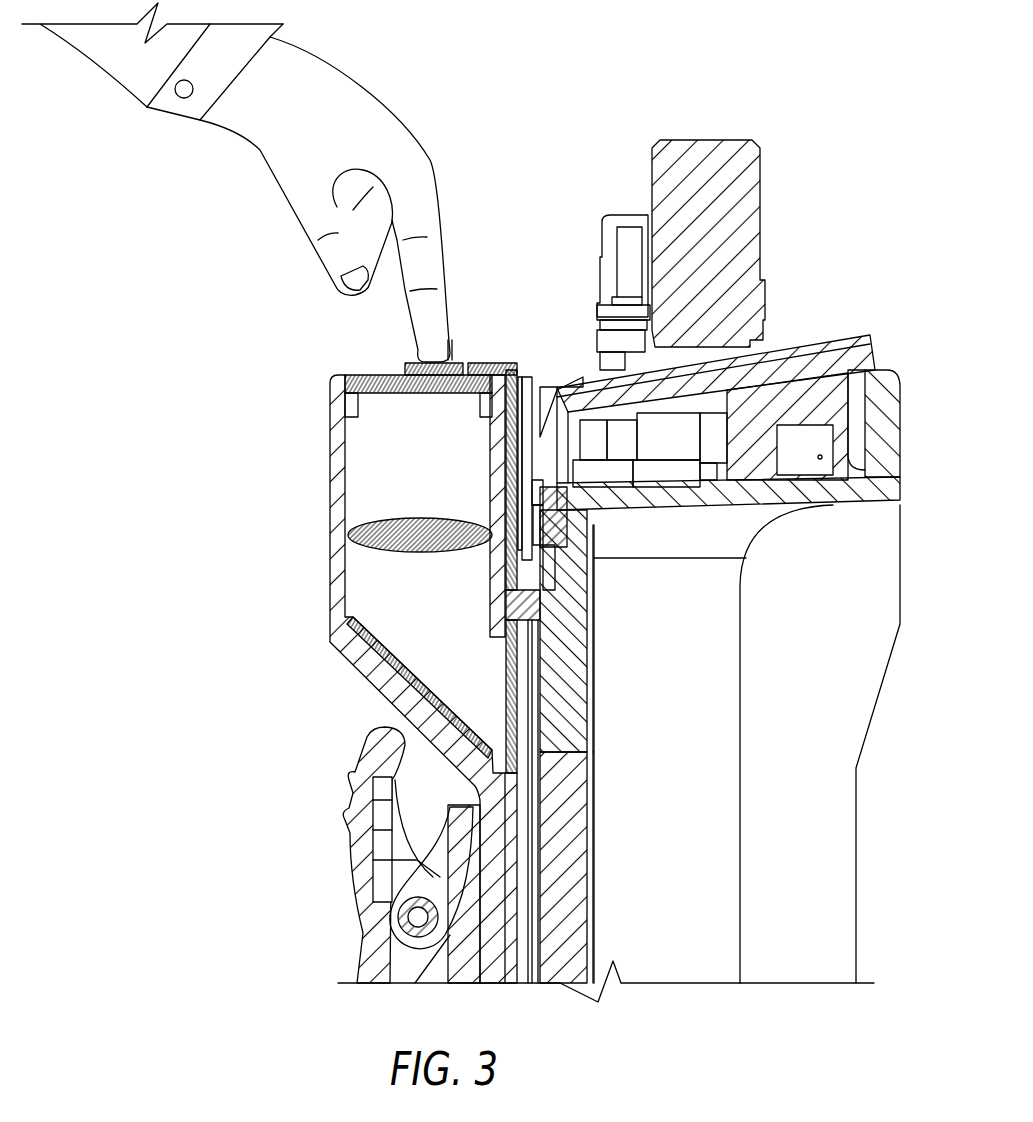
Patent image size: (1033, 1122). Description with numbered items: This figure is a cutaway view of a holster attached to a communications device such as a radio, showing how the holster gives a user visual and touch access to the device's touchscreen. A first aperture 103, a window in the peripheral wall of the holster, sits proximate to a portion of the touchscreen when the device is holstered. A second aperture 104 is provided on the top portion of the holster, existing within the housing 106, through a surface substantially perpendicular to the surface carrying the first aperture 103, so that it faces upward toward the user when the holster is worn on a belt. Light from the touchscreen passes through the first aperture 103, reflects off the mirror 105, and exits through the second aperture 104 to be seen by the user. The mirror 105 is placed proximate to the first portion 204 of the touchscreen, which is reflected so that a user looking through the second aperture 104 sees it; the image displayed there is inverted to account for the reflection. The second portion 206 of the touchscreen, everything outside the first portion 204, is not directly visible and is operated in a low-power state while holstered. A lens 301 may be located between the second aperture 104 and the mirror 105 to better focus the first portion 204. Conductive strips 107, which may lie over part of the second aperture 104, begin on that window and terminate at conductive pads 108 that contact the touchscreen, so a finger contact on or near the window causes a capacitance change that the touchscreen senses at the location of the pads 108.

The first aperture 103 is at (512, 697).
The second aperture 104 is at (377, 367).
The mirror 105 is at (392, 688).
The housing 106 is at (330, 522).
The conductive strips 107 is at (470, 363).
The conductive pads 108 is at (527, 603).
The first portion of the touchscreen 204 is at (588, 710).
The second portion of the touchscreen 206 is at (588, 913).
The lens 301 is at (412, 520).